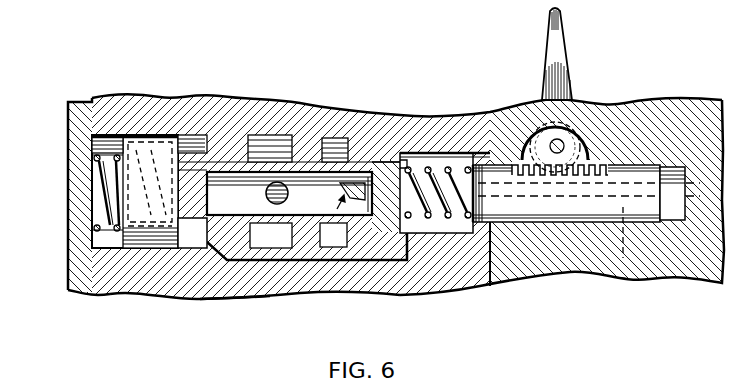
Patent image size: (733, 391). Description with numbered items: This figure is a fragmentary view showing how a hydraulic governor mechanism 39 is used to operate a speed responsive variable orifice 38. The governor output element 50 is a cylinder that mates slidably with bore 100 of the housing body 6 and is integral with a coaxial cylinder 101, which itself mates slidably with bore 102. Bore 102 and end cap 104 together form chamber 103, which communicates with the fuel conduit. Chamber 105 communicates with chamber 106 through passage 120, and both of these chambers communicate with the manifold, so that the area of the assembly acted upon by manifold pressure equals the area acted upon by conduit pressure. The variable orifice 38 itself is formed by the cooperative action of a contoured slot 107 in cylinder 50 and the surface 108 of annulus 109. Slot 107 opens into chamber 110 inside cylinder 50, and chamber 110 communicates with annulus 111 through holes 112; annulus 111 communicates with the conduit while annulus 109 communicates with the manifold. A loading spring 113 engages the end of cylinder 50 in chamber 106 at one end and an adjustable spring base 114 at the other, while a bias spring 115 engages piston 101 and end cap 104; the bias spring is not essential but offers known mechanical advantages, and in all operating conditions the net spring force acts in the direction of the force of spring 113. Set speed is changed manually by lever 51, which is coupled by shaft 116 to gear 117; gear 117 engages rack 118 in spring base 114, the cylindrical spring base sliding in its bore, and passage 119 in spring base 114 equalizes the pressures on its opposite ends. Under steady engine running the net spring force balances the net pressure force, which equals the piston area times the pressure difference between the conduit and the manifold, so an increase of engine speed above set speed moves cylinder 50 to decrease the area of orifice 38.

The governor mechanism 39 is at (88, 92).
The bias spring 115 is at (100, 135).
The cylinder (piston) 101 is at (148, 150).
The chamber 105 is at (195, 157).
The bore 100 is at (270, 155).
The annulus 111 is at (295, 162).
The annulus 109 is at (335, 158).
The surface of annulus 108 is at (366, 162).
The chamber 106 is at (420, 167).
The rack 118 is at (540, 120).
The lever 51 is at (569, 46).
The shaft 116 is at (561, 146).
The gear 117 is at (592, 160).
The end cap 104 is at (68, 180).
The chamber 103 is at (110, 250).
The bore 102 is at (114, 250).
The output element (cylinder) 50 is at (183, 296).
The chamber 110 is at (235, 200).
The holes 112 is at (280, 204).
The variable orifice 38 is at (325, 266).
The passage 120 is at (326, 267).
The contoured slot 107 is at (370, 205).
The housing body 6 is at (422, 293).
The loading spring 113 is at (432, 205).
The adjustable spring base 114 is at (518, 212).
The passage 119 is at (623, 260).